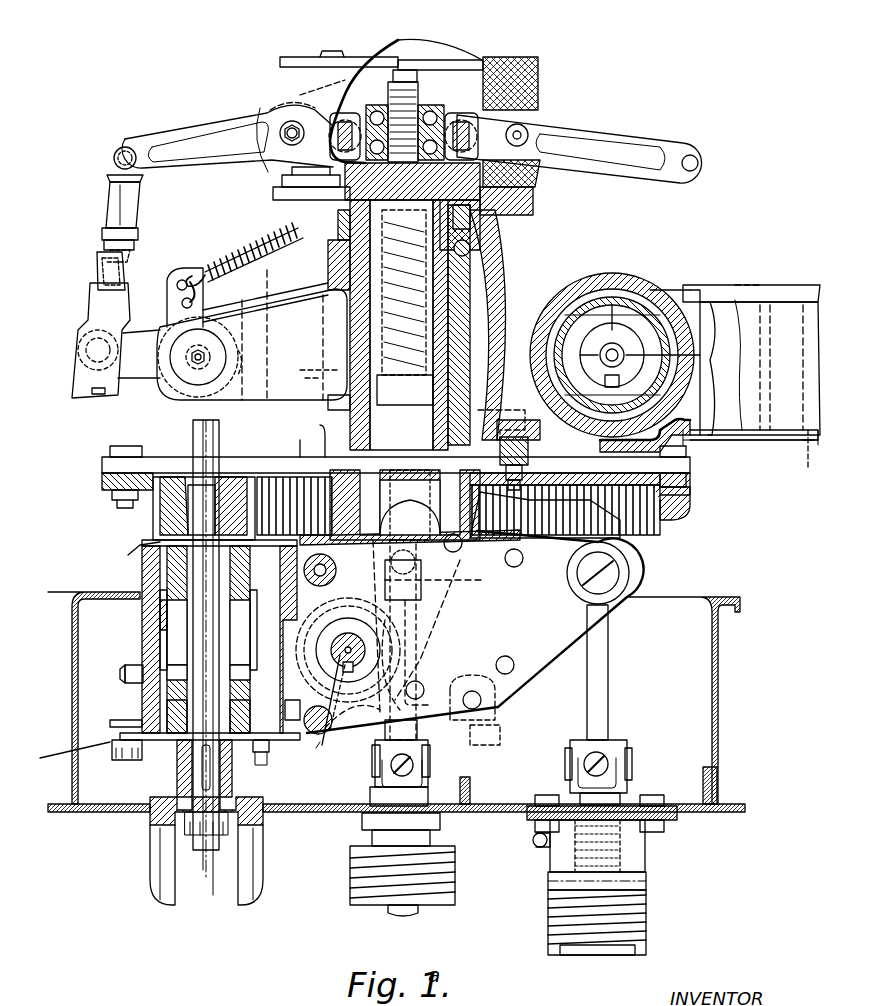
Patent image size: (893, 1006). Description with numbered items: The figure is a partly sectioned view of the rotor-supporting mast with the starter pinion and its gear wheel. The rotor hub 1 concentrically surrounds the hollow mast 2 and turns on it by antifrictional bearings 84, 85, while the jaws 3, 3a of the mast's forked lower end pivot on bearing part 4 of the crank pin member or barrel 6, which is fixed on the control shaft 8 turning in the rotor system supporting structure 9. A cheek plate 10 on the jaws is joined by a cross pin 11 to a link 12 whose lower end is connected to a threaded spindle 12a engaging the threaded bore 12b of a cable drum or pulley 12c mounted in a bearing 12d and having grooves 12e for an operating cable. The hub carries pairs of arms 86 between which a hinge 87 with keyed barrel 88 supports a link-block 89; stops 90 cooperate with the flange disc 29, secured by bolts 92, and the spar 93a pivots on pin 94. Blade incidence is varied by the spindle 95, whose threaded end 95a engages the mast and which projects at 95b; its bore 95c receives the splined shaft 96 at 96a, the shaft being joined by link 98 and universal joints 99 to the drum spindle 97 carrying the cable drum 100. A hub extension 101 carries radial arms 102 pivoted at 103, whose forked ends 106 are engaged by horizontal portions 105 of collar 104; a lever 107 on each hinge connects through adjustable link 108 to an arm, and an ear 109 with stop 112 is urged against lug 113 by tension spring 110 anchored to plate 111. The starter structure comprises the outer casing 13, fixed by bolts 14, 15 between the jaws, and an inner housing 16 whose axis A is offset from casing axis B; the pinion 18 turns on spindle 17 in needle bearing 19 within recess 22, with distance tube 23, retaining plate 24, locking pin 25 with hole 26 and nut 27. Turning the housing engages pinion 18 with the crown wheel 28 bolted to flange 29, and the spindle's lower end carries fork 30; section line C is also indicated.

The rotor hub 1 is at (490, 320).
The rotor-supporting mast 2 is at (452, 318).
The jaw 3 is at (450, 620).
The jaw 3a is at (318, 758).
The bearing part 4 is at (330, 612).
The crank pin member or barrel 6 is at (344, 630).
The control shaft 8 is at (343, 728).
The rotor system supporting structure 9 is at (692, 696).
The cheek plate 10 is at (548, 660).
The cross pin 11 is at (612, 580).
The link 12 is at (598, 690).
The threaded spindle 12a is at (612, 800).
The threaded bore 12b is at (640, 852).
The cable drum or pulley 12c is at (648, 888).
The bearing 12d is at (555, 862).
The grooves 12e is at (648, 922).
The hollow outer casing 13 is at (148, 618).
The bolt 14 is at (322, 575).
The bolt 15 is at (310, 740).
The hollow inner housing 16 is at (160, 690).
The spindle 17 is at (196, 770).
The starter pinion 18 is at (155, 510).
The upper needle roller bearing 19 is at (160, 560).
The recess 22 is at (160, 708).
The distance tube 23 is at (185, 628).
The bearing-retaining plate 24 is at (264, 752).
The headed locking pin 25 is at (112, 722).
The hole 26 is at (97, 650).
The nut 27 is at (118, 752).
The crown wheel 28 is at (686, 518).
The bottom flange 29 is at (104, 465).
The fork 30 is at (155, 858).
The antifrictional bearing 84 is at (530, 535).
The antifrictional bearing 85 is at (490, 218).
The radially projecting arms 86 is at (320, 347).
The hinge 87 is at (614, 353).
The barrel 88 is at (690, 280).
The link-block 89 is at (622, 275).
The stop 90 is at (645, 445).
The bolts 92 is at (520, 455).
The rotor blade spar 93a is at (810, 458).
The pivot pin 94 is at (722, 395).
The spindle 95 is at (392, 329).
The threaded end 95a is at (350, 275).
The upward extended end of spindle 95b is at (415, 80).
The longitudinal bore 95c is at (338, 380).
The shaft 96 is at (470, 538).
The spline 96a is at (468, 400).
The drum spindle 97 is at (424, 797).
The link 98 is at (440, 600).
The universal joints 99 is at (450, 572).
The cable drum 100 is at (440, 852).
The hub extension 101 is at (292, 96).
The radial arms 102 is at (185, 135).
The pivot 103 is at (282, 145).
The collar 104 is at (372, 108).
The horizontal portions 105 is at (300, 85).
The forked end portions 106 is at (340, 125).
The lever 107 is at (150, 370).
The adjustable link 108 is at (108, 206).
The ear 109 is at (170, 300).
The tension spring 110 is at (218, 252).
The anchor plate 111 is at (340, 262).
The stop 112 is at (252, 300).
The lug 113 is at (268, 385).
The longitudinal axis of starter pinion A is at (199, 638).
The longitudinal axis of outer casing B is at (215, 650).
The section line C is at (325, 417).